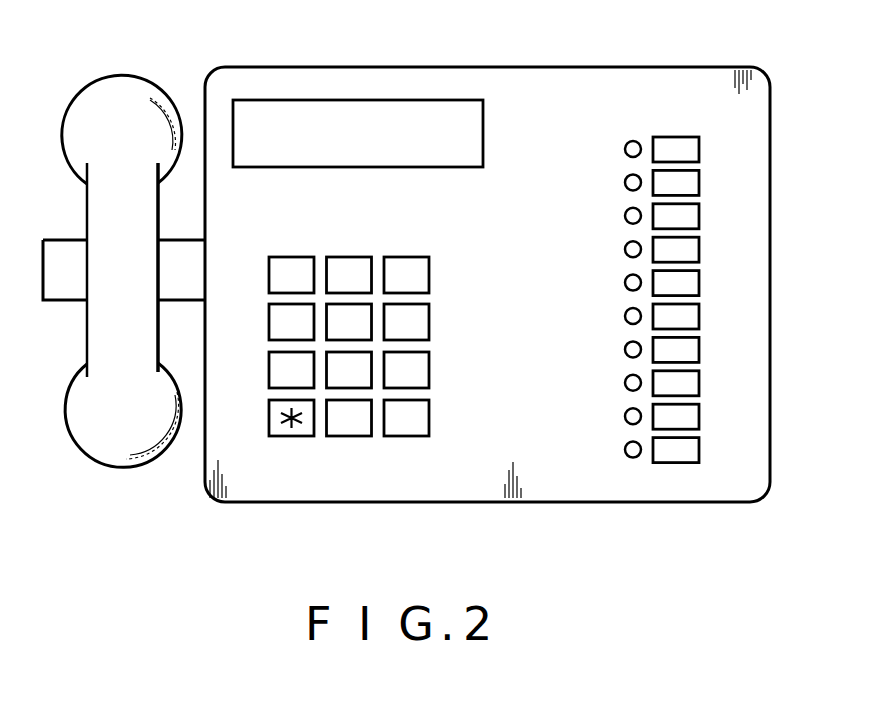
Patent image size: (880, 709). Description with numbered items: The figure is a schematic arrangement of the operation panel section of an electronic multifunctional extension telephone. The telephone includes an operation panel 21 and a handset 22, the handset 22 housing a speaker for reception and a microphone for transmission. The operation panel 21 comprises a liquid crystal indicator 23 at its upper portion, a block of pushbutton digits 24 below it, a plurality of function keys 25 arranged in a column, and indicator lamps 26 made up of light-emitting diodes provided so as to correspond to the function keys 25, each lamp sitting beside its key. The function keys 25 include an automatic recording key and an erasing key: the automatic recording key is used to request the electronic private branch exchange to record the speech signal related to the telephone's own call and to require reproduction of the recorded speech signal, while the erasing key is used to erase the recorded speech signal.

The operation panel 21 is at (298, 67).
The handset 22 is at (135, 88).
The liquid crystal indicator (LCD) 23 is at (484, 140).
The pushbutton digits 24 is at (435, 257).
The function keys 25 is at (706, 135).
The indicator lamps 26 is at (625, 135).